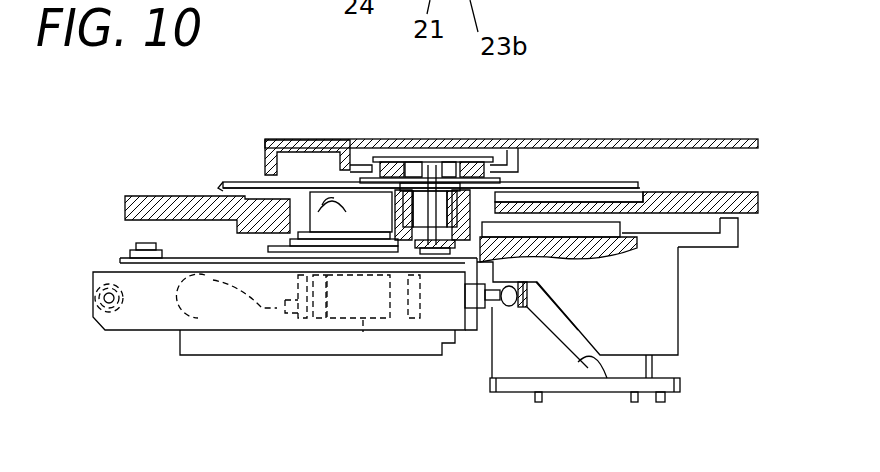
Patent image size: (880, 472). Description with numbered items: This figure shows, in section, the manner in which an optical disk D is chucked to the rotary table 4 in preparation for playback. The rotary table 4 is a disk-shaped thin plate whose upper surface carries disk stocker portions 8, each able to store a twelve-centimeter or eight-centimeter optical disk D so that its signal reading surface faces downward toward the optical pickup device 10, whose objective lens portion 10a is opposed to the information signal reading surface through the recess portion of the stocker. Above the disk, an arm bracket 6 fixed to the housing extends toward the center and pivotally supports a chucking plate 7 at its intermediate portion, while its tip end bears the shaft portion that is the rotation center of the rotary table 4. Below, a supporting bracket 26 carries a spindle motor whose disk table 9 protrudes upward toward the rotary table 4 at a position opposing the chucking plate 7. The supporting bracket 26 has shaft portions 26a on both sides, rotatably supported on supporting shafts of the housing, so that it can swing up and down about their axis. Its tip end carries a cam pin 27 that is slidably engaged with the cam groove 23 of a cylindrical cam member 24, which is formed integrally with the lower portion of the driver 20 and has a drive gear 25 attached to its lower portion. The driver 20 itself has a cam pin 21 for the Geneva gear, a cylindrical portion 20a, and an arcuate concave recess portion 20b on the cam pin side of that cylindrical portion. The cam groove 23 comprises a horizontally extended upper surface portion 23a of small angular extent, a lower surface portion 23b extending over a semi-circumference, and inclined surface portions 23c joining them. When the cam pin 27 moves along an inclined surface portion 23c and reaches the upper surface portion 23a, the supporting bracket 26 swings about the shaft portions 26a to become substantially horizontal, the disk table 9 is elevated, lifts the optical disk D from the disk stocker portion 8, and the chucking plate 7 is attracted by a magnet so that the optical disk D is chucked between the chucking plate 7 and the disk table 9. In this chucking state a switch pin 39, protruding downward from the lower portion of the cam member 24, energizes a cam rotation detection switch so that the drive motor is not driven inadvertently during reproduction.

The rotary table 4 is at (143, 196).
The arm bracket 6 is at (710, 138).
The chucking plate 7 is at (473, 162).
The disk stocker portion 8 is at (223, 185).
The disk table 9 is at (412, 162).
The optical pickup device 10 is at (363, 333).
The objective lens portion 10a is at (323, 198).
The driver 20 is at (602, 222).
The cylindrical portion 20a is at (495, 208).
The arcuate concave recess portion 20b is at (627, 225).
The cam pin 21 is at (733, 233).
The cam groove 23 is at (560, 300).
The upper surface portion 23a is at (523, 300).
The lower surface portion 23b is at (665, 375).
The inclined surface portion 23c is at (600, 365).
The cam member 24 is at (670, 315).
The drive gear 25 is at (682, 382).
The supporting bracket 26 is at (267, 333).
The shaft portion 26a is at (123, 307).
The cam pin 27 is at (505, 307).
The switch pin 39 is at (660, 402).
The optical disk D is at (243, 183).